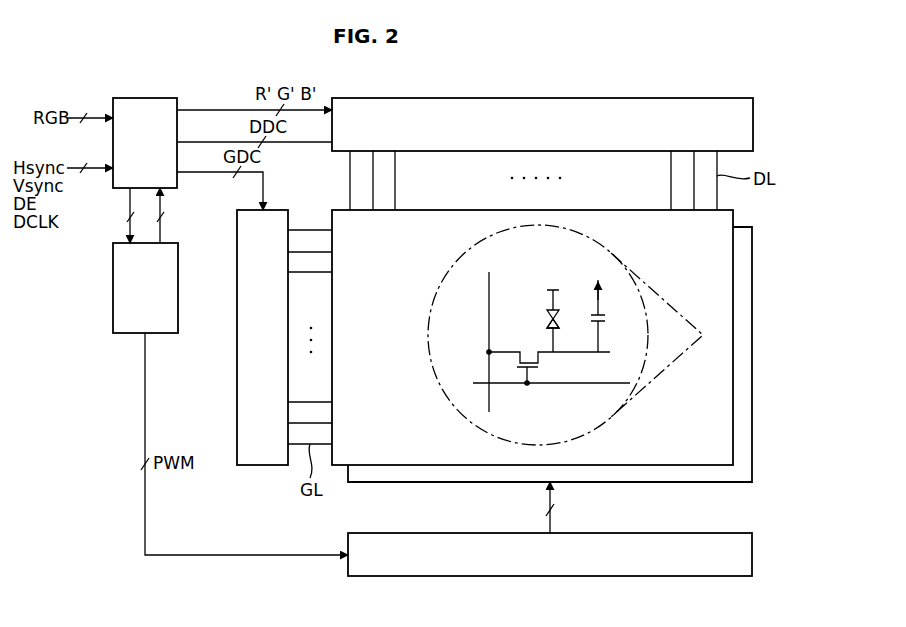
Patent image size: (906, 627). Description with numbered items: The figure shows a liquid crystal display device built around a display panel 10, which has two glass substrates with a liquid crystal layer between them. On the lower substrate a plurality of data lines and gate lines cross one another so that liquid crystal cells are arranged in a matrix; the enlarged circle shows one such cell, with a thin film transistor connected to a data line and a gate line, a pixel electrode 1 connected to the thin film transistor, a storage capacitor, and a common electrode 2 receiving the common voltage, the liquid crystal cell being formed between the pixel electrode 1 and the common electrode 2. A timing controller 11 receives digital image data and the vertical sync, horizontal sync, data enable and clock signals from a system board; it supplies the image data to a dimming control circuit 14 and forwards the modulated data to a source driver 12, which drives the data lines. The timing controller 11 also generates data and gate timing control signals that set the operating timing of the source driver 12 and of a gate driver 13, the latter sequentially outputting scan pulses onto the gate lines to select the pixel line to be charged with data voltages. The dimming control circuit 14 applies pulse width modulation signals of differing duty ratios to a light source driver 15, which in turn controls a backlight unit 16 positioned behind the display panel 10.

The display panel 10 is at (403, 349).
The timing controller 11 is at (154, 147).
The source driver 12 is at (544, 134).
The gate driver 13 is at (273, 349).
The dimming control circuit 14 is at (154, 297).
The light source driver 15 is at (561, 566).
The backlight unit 16 is at (752, 455).
The pixel electrode 1 is at (548, 326).
The common electrode 2 is at (548, 312).